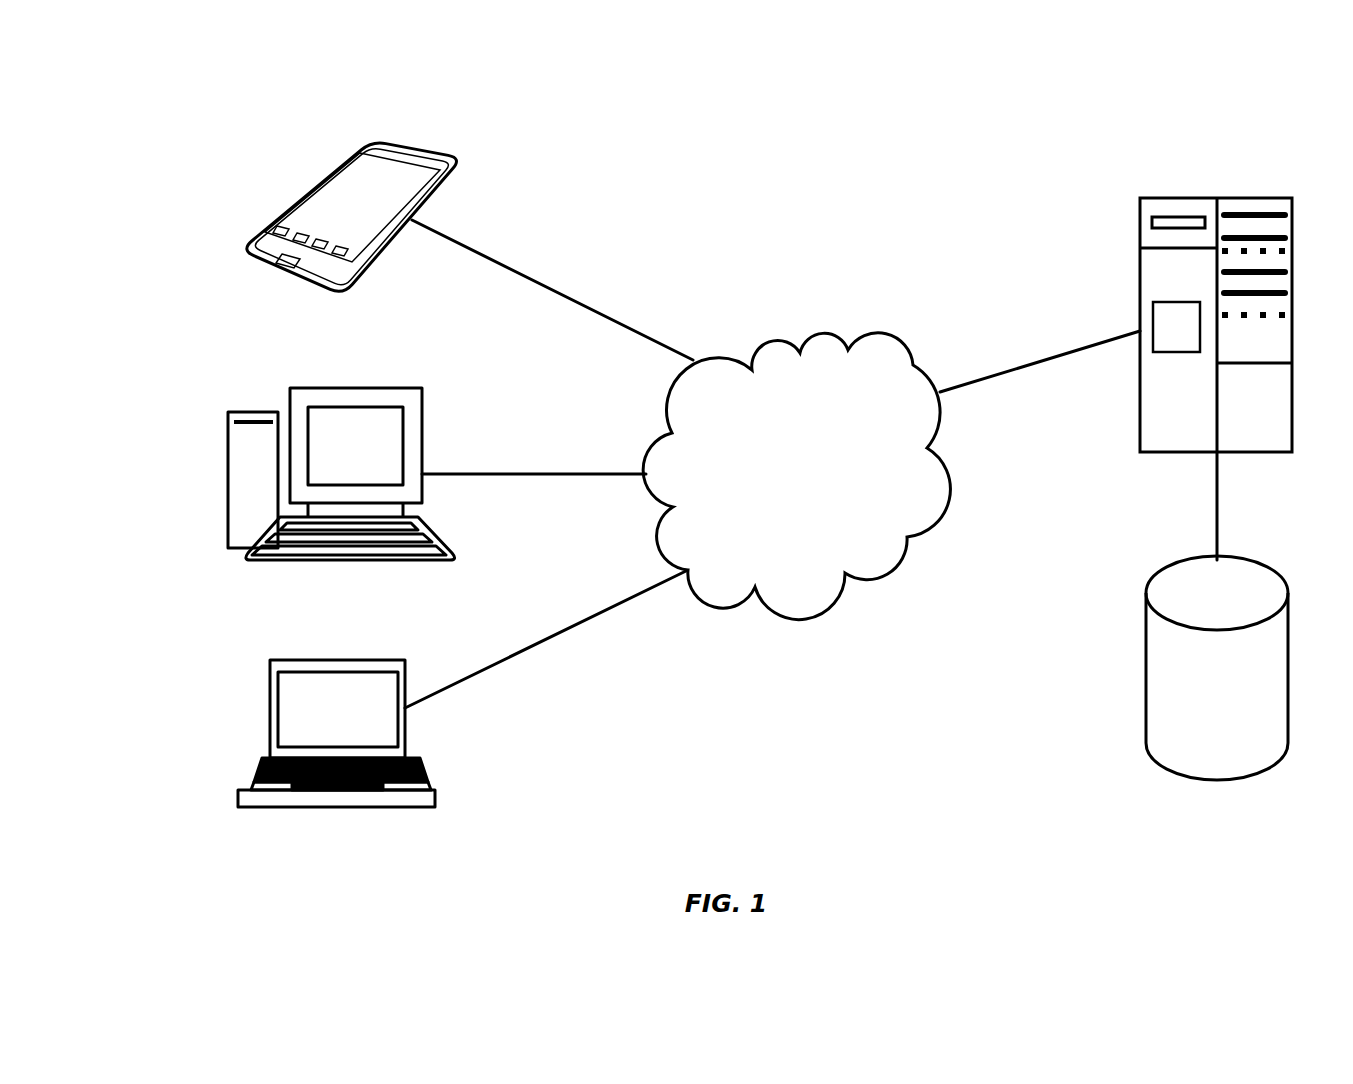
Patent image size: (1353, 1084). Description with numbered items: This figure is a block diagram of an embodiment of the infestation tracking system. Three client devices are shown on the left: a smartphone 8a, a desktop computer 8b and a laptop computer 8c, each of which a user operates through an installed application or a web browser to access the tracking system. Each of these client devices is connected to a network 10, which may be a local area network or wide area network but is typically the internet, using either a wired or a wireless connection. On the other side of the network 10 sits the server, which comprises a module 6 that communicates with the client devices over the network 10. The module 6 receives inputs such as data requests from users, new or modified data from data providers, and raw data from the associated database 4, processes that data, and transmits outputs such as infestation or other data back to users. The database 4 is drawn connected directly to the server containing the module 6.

The smartphone 8a is at (300, 193).
The desktop computer 8b is at (228, 412).
The laptop computer 8c is at (245, 792).
The network 10 is at (796, 476).
The module 6 is at (1216, 325).
The database 4 is at (1217, 668).